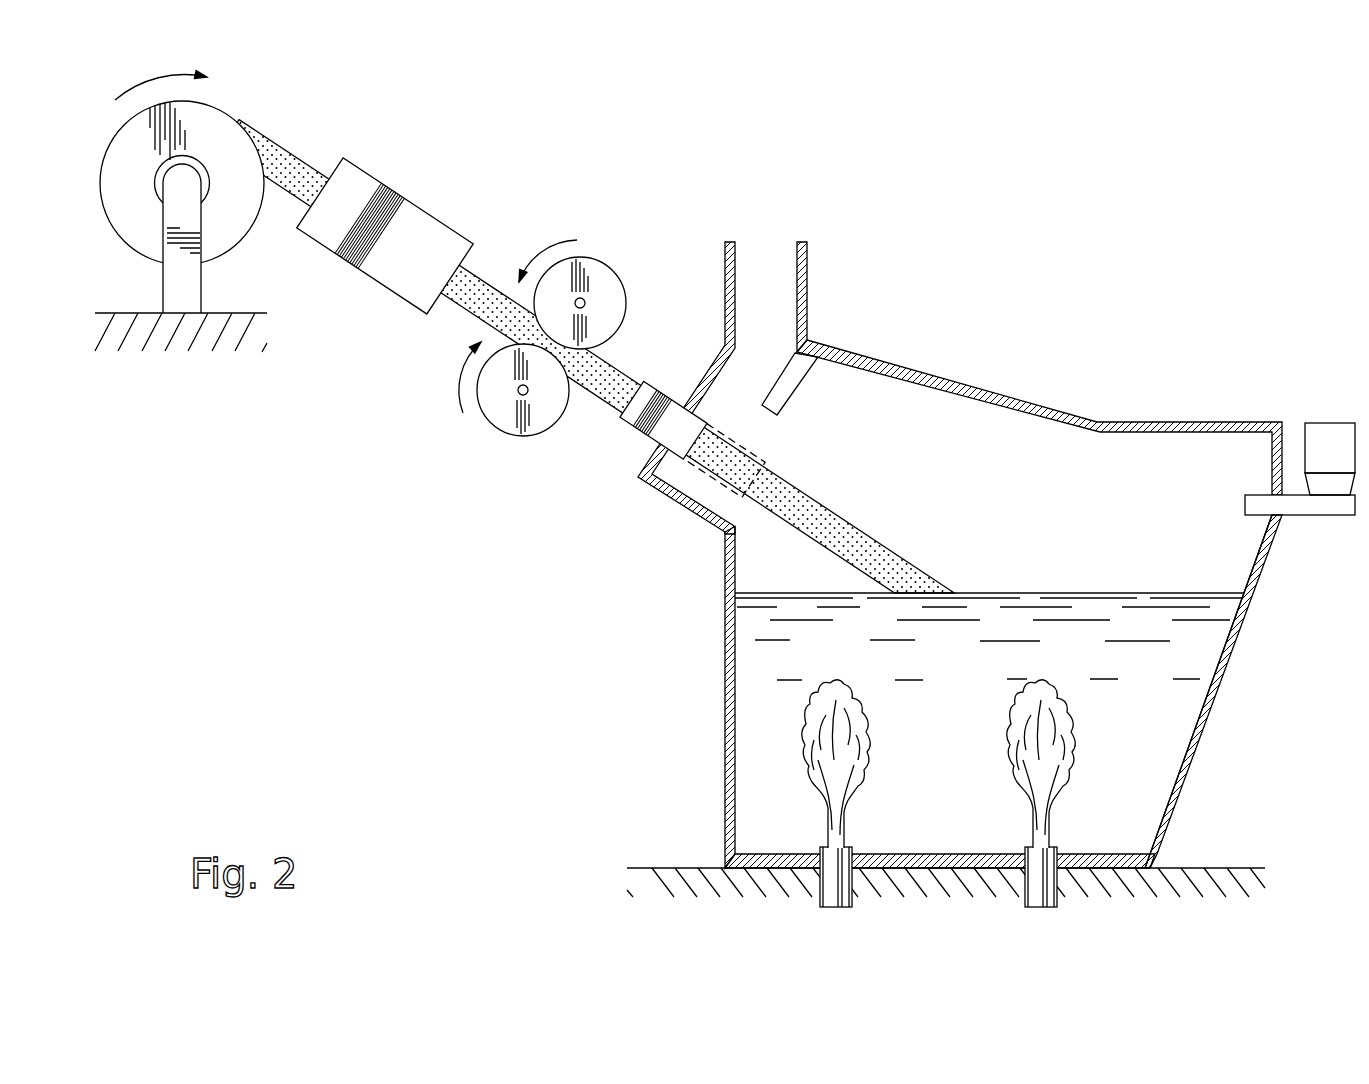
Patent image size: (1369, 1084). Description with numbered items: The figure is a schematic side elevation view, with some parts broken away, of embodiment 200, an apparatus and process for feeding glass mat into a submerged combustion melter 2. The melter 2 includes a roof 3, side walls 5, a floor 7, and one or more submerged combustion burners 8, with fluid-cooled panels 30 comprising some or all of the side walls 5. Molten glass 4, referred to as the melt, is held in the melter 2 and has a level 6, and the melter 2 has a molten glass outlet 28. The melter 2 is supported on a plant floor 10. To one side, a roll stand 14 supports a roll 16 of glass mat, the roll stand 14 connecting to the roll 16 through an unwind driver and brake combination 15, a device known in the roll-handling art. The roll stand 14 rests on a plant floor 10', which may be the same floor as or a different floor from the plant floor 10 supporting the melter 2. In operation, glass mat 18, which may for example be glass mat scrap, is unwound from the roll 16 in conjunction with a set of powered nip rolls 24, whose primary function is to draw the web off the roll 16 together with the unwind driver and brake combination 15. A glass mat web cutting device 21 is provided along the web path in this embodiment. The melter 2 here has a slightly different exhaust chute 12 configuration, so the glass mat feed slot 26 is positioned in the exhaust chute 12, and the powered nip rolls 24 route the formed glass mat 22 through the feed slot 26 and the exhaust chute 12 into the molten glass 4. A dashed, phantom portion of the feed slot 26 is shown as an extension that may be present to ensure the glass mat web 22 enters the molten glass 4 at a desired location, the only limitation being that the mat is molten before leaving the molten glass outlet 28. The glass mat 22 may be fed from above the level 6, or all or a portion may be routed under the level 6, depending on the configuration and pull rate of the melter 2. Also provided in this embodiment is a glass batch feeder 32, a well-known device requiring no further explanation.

The embodiment 200 is at (1012, 155).
The melter 2 is at (1004, 691).
The roof 3 is at (932, 372).
The molten glass 4 is at (930, 745).
The side walls 5 is at (1190, 743).
The level 6 is at (1003, 593).
The floor 7 is at (983, 853).
The submerged combustion burners 8 is at (833, 905).
The plant floor 10 is at (961, 857).
The plant floor 10' is at (208, 305).
The exhaust chute 12 is at (810, 265).
The roll stand 14 is at (163, 290).
The unwind driver and brake combination 15 is at (153, 183).
The roll 16 is at (123, 157).
The glass mat 18 is at (282, 150).
The glass mat web cutting device 21 is at (365, 172).
The formed glass mat 22 is at (484, 275).
The powered nip rolls 24 is at (617, 290).
The glass mat feed slot 26 is at (660, 452).
The molten glass outlet 28 is at (725, 813).
The fluid-cooled panels 30 is at (1202, 733).
The glass batch feeder 32 is at (1332, 422).